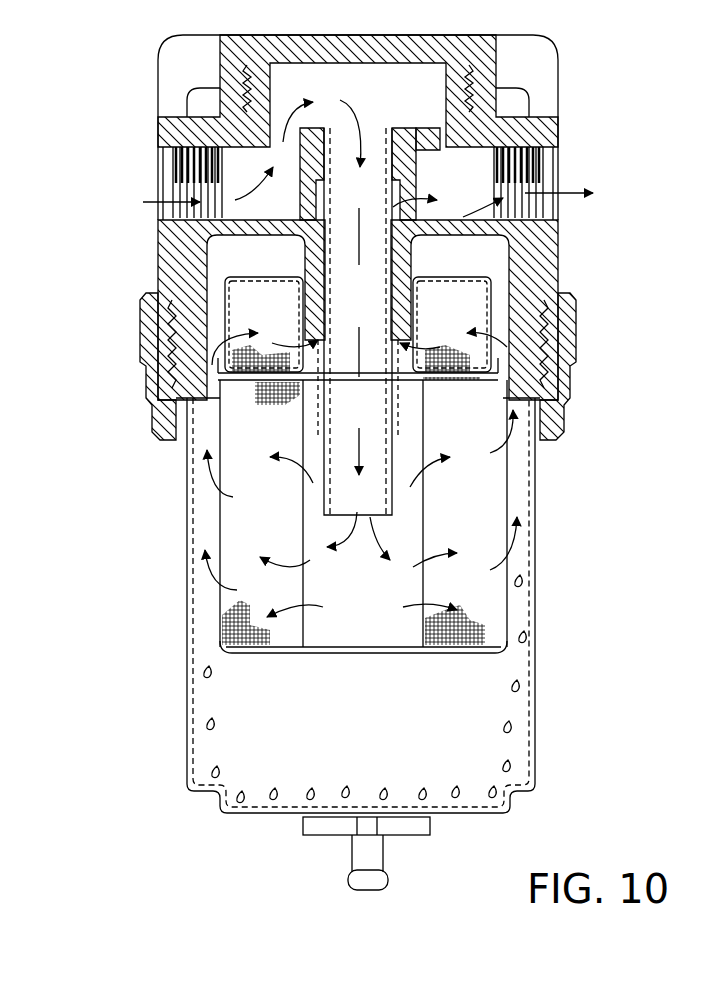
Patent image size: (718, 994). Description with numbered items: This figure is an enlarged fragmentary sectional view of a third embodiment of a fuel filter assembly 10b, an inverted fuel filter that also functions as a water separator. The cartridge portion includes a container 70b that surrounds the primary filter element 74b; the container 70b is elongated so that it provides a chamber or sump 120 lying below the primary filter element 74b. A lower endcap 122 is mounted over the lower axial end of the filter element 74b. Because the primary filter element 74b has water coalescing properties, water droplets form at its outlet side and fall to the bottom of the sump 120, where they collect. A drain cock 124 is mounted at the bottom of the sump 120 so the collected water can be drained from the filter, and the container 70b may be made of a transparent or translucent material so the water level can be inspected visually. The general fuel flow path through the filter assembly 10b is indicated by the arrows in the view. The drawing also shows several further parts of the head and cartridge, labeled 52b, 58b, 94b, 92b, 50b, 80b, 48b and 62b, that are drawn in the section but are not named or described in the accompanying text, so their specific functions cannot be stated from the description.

The fuel filter assembly 10b is at (140, 62).
The inlet filter element 52b is at (187, 217).
The outlet filter element 58b is at (543, 213).
The upper chamber 94b is at (280, 278).
The upper filter element 92b is at (290, 317).
The filter element 50b is at (413, 322).
The primary filter element 74b is at (287, 439).
The annular passage / plate 80b is at (482, 384).
The central tube 48b is at (372, 515).
The retaining nut 62b is at (560, 417).
The container 70b is at (187, 584).
The lower endcap 122 is at (367, 655).
The sump 120 is at (473, 745).
The drain cock 124 is at (385, 853).